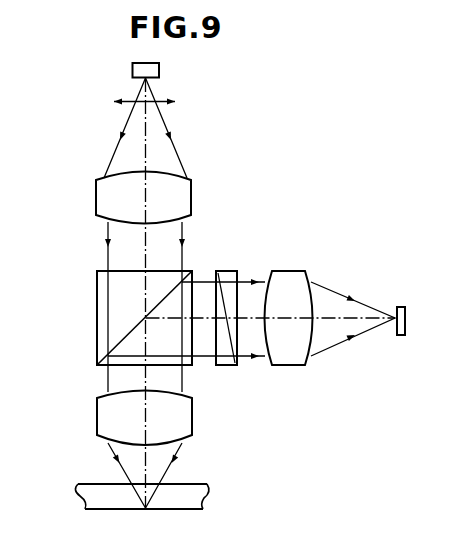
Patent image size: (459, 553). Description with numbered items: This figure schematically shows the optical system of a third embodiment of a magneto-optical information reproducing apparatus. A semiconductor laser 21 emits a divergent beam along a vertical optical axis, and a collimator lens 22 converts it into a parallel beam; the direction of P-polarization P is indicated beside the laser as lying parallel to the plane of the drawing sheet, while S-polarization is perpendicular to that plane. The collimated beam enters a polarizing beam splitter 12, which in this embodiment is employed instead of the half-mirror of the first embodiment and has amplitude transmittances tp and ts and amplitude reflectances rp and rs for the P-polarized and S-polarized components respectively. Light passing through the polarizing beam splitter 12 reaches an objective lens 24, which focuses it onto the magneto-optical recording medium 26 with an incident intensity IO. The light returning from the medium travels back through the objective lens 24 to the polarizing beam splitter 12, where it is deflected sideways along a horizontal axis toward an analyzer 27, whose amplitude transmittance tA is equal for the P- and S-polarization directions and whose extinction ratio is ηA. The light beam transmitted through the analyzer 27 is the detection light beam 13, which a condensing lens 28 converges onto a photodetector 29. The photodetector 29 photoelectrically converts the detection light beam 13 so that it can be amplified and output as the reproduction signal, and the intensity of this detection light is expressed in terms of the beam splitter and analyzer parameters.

The semiconductor laser 21 is at (132, 69).
The direction of P-polarization P is at (156, 104).
The collimator lens 22 is at (96, 198).
The polarizing beam splitter 12 is at (97, 300).
The analyzer 27 is at (218, 271).
The condensing lens 28 is at (289, 271).
The detection light beam 13 is at (333, 346).
The photodetector 29 is at (400, 307).
The objective lens 24 is at (97, 408).
The magneto-optical recording medium 26 is at (78, 490).